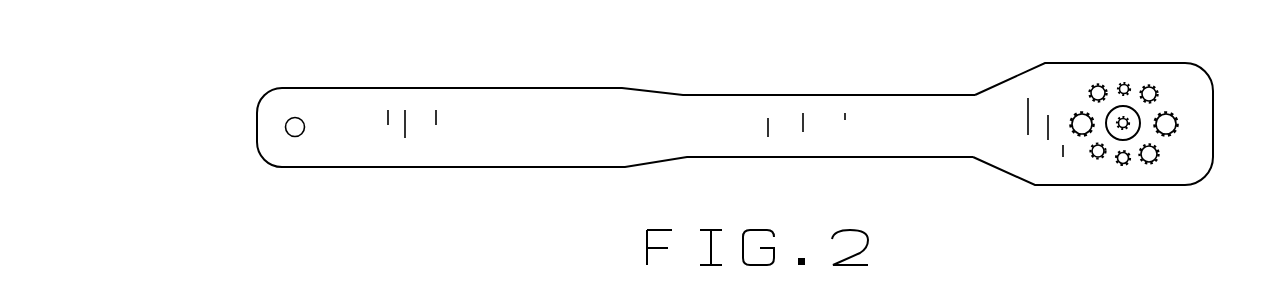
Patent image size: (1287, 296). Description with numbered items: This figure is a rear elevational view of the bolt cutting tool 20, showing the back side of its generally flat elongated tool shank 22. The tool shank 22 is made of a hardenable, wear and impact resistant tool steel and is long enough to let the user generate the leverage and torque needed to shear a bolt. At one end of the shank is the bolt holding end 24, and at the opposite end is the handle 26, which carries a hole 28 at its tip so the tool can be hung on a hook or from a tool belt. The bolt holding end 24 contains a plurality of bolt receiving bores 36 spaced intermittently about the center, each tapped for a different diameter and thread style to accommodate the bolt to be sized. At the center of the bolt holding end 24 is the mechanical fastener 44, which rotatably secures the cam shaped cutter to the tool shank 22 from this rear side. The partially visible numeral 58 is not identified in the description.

The bolt cutting tool 20 is at (713, 72).
The tool shank 22 is at (883, 94).
The bolt holding end 24 is at (1214, 112).
The handle 26 is at (262, 101).
The hole 28 is at (293, 137).
The bolt receiving bores 36 is at (1093, 87).
The mechanical fastener 44 is at (1127, 119).
The numeral cropped from adjacent figure 58 is at (1113, 291).